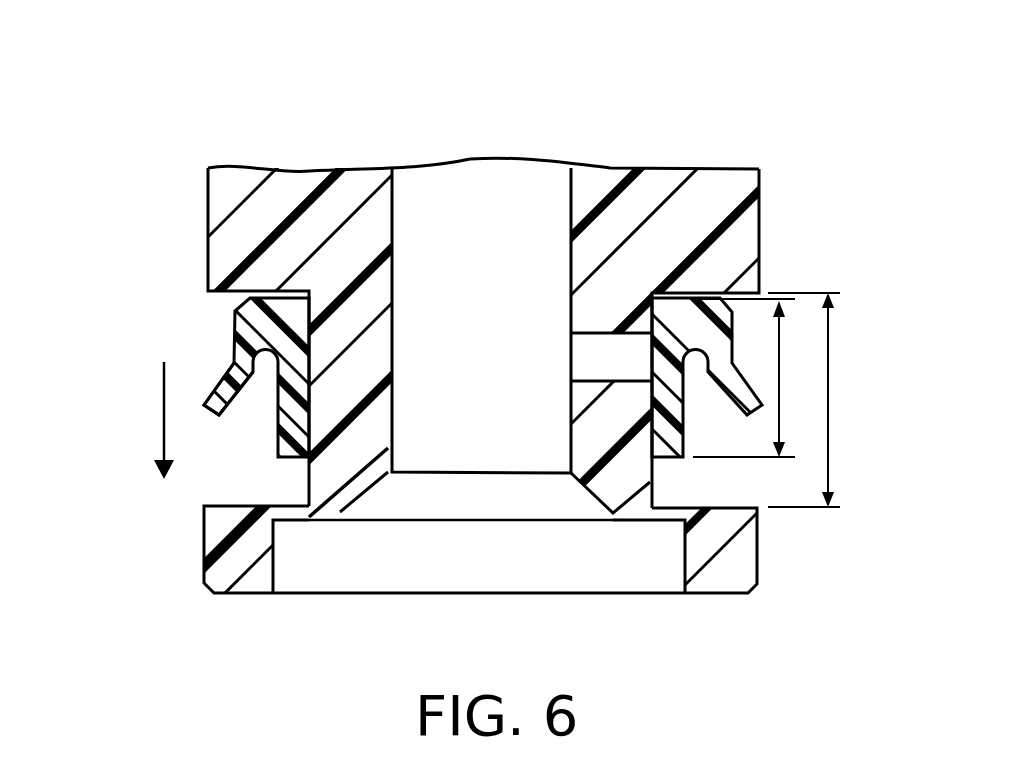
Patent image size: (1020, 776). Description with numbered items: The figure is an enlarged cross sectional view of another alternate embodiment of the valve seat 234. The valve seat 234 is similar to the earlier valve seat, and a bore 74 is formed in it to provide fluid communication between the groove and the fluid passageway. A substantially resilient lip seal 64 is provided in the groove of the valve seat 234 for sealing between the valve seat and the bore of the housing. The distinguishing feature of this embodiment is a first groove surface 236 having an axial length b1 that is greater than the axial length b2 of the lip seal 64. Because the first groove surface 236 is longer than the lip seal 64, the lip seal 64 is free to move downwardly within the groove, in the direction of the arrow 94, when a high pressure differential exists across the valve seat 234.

The valve seat 234 is at (254, 132).
The bore 74 is at (592, 335).
The lip seal 64 is at (218, 313).
The first groove surface 236 is at (224, 322).
The arrow 94 is at (165, 410).
The axial length of the first groove surface b1 is at (913, 304).
The axial length of the lip seal b2 is at (779, 427).